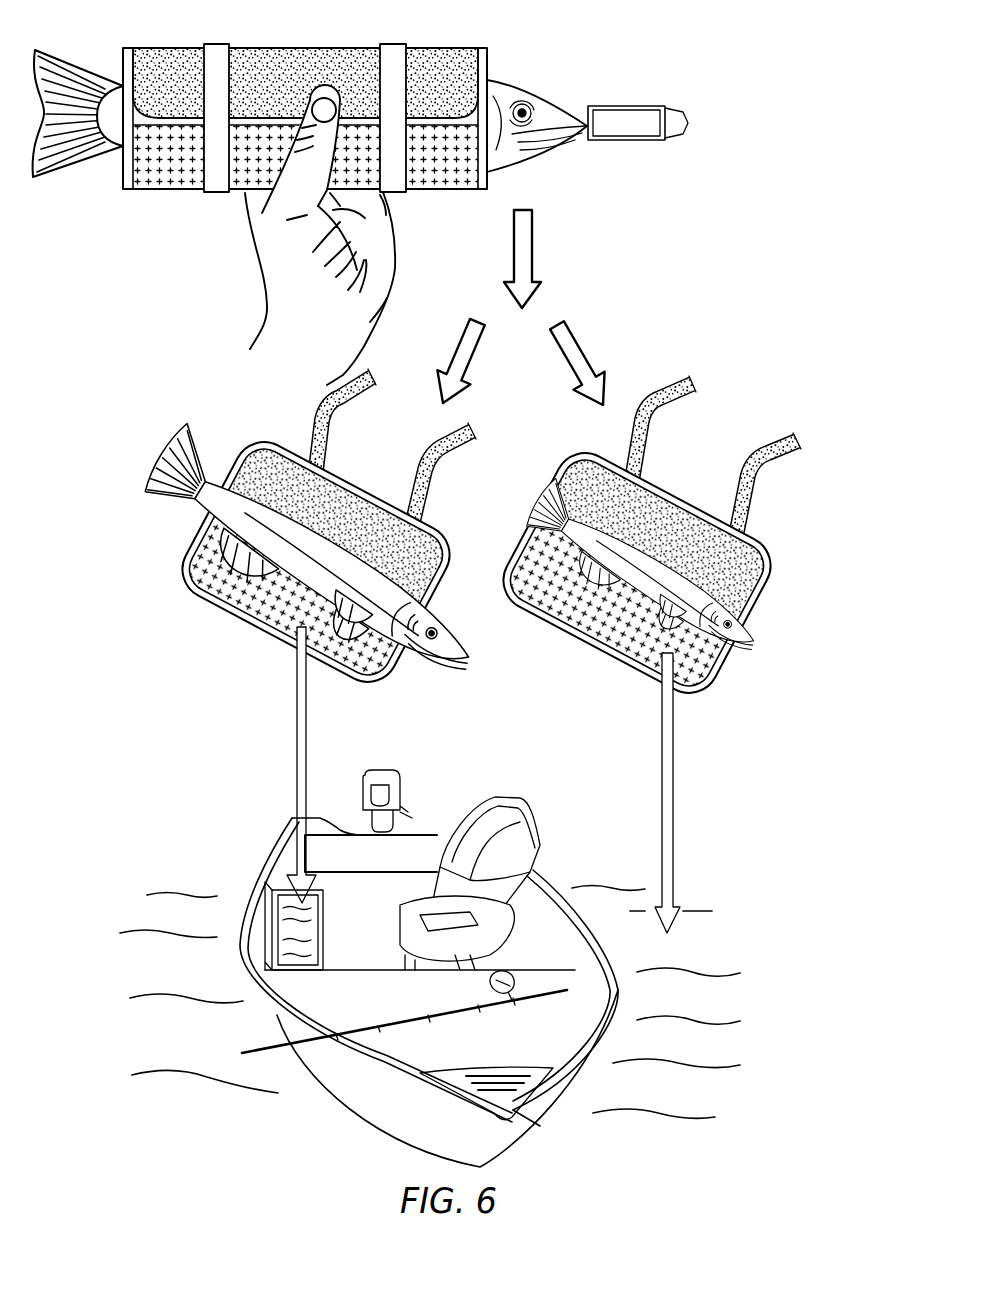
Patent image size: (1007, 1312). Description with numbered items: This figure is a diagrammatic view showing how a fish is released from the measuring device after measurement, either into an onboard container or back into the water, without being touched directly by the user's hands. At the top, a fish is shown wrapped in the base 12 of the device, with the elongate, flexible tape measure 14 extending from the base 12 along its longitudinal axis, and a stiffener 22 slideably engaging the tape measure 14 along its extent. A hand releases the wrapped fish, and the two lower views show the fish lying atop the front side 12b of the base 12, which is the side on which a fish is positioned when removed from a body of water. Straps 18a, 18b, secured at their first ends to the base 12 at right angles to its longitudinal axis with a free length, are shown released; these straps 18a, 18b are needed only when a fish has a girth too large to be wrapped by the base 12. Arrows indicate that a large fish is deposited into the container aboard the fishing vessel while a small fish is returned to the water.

The base 12 is at (306, 48).
The front side 12b is at (179, 190).
The tape measure 14 is at (638, 131).
The stiffeners 22 is at (629, 142).
The strap 18a is at (316, 390).
The strap 18b is at (418, 443).